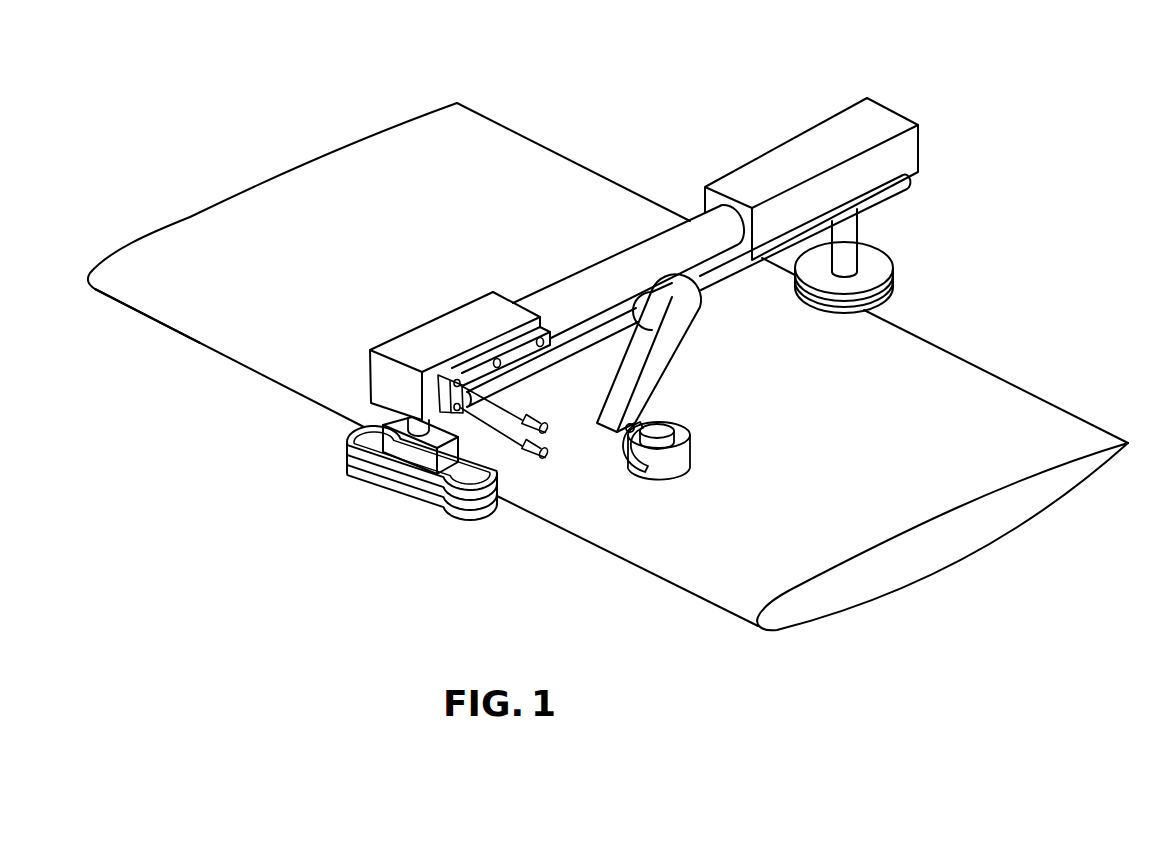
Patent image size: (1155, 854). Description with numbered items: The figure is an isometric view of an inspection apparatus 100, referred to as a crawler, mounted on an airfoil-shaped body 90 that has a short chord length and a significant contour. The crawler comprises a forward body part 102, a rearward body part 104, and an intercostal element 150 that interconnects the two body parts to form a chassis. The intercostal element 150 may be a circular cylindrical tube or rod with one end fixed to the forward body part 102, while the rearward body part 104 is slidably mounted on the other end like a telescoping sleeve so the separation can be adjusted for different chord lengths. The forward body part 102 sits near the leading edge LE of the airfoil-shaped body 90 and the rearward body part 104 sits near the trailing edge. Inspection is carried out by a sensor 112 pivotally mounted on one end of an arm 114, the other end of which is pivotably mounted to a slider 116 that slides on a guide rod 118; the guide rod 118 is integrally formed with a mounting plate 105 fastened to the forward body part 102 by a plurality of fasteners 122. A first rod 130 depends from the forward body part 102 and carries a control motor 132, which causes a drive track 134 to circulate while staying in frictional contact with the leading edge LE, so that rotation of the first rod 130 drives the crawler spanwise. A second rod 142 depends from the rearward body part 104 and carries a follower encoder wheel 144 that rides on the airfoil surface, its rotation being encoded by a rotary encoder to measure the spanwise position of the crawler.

The airfoil-shaped body 90 is at (320, 153).
The leading edge LE is at (190, 336).
The inspection apparatus 100 is at (693, 66).
The forward body part 102 is at (398, 317).
The rearward body part 104 is at (939, 90).
The mounting plate 105 is at (482, 370).
The sensor 112 is at (660, 425).
The arm 114 is at (697, 322).
The slider 116 is at (657, 293).
The guide rod 118 is at (742, 264).
The fasteners 122 is at (534, 460).
The first rod 130 is at (370, 423).
The control motor 132 is at (402, 440).
The drive track 134 is at (385, 498).
The second rod 142 is at (848, 226).
The follower encoder wheel 144 is at (893, 289).
The intercostal element 150 is at (623, 270).